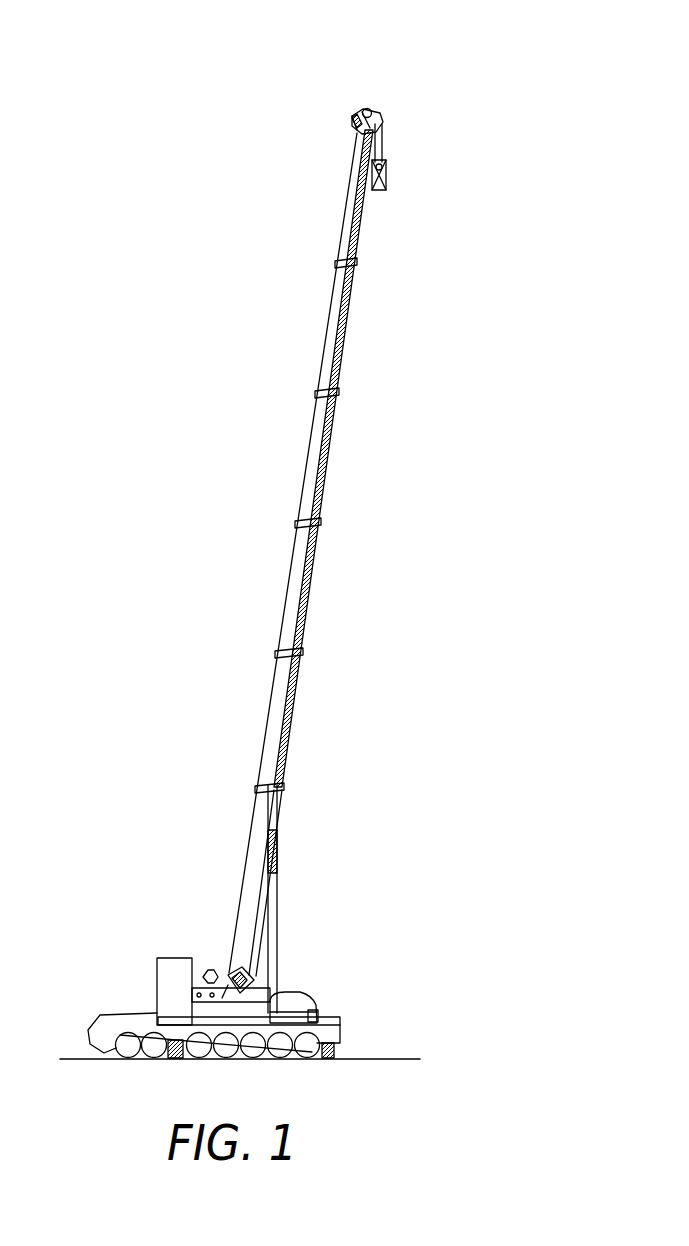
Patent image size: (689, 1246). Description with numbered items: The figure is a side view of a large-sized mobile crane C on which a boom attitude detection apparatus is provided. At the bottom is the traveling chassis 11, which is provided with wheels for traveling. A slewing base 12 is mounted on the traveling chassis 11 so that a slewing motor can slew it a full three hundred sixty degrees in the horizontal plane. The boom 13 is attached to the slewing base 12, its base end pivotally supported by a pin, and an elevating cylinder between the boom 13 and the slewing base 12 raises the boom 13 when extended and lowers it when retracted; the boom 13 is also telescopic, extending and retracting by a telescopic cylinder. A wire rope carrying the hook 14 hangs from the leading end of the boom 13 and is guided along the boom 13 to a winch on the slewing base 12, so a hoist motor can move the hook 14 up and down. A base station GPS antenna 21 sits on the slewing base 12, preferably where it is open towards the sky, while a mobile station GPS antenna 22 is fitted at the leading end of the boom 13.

The mobile crane C is at (172, 268).
The traveling chassis 11 is at (132, 1020).
The slewing base 12 is at (292, 1000).
The boom 13 is at (307, 452).
The hook 14 is at (385, 172).
The base station GPS antenna 21 is at (210, 970).
The mobile station GPS antenna 22 is at (366, 106).